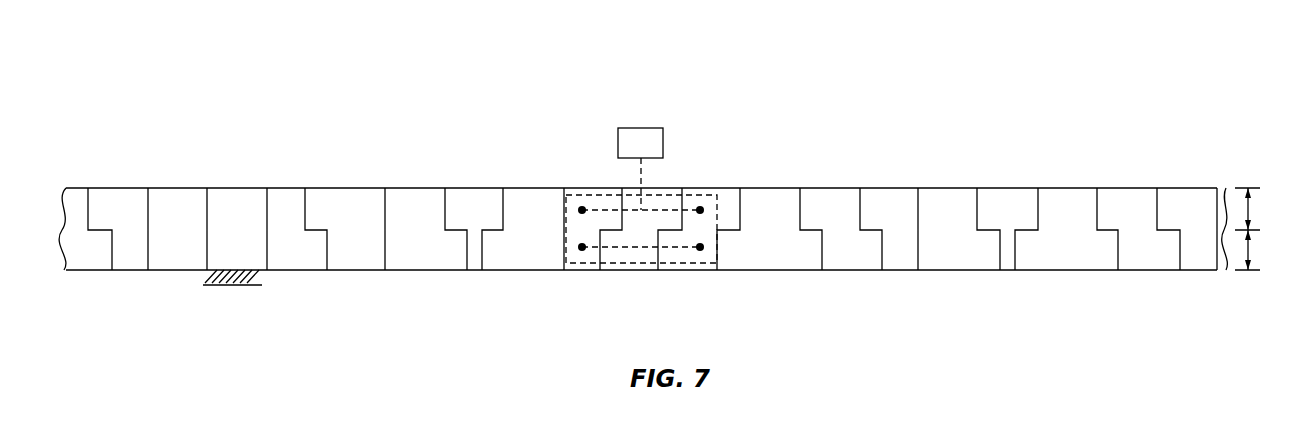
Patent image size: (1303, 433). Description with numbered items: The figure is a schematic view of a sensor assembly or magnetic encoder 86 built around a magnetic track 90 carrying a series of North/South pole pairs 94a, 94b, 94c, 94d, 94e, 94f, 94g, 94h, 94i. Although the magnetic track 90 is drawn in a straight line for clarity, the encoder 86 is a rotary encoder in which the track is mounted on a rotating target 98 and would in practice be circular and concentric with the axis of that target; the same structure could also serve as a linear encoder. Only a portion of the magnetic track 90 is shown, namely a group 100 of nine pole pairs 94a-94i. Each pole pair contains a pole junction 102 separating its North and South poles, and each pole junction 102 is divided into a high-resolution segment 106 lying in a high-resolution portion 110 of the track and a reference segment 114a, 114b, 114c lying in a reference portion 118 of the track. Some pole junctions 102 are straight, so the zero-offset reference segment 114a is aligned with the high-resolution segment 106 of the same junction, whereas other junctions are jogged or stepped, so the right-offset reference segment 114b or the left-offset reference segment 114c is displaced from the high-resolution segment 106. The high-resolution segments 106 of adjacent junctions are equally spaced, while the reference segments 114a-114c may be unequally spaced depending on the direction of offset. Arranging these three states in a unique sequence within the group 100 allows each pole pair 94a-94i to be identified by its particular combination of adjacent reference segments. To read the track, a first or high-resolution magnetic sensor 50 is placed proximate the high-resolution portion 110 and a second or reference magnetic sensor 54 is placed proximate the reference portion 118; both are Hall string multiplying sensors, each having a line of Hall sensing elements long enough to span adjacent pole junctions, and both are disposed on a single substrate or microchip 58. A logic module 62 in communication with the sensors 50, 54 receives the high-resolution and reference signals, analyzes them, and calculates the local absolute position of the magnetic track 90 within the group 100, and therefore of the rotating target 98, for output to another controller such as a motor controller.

The magnetic encoder 86 is at (1102, 72).
The magnetic track 90 is at (1188, 164).
The group of nine pole pairs 100 is at (1152, 118).
The North/South pole pair 94a is at (90, 175).
The North/South pole pair 94b is at (209, 175).
The North/South pole pair 94c is at (330, 175).
The North/South pole pair 94d is at (448, 175).
The North/South pole pair 94e is at (562, 282).
The North/South pole pair 94f is at (683, 175).
The North/South pole pair 94g is at (803, 175).
The North/South pole pair 94h is at (921, 175).
The North/South pole pair 94i is at (1040, 175).
The high-resolution segment 106 is at (1040, 215).
The zero-offset reference segment 114a is at (267, 254).
The right-offset reference segment 114b is at (882, 254).
The left-offset reference segment 114c is at (1015, 254).
The pole junction 102 is at (490, 237).
The rotating target 98 is at (256, 290).
The high-resolution magnetic sensor 50 is at (612, 198).
The reference magnetic sensor 54 is at (681, 252).
The microchip 58 is at (700, 252).
The logic module 62 is at (663, 140).
The high-resolution portion 110 is at (1253, 210).
The reference portion 118 is at (1253, 253).